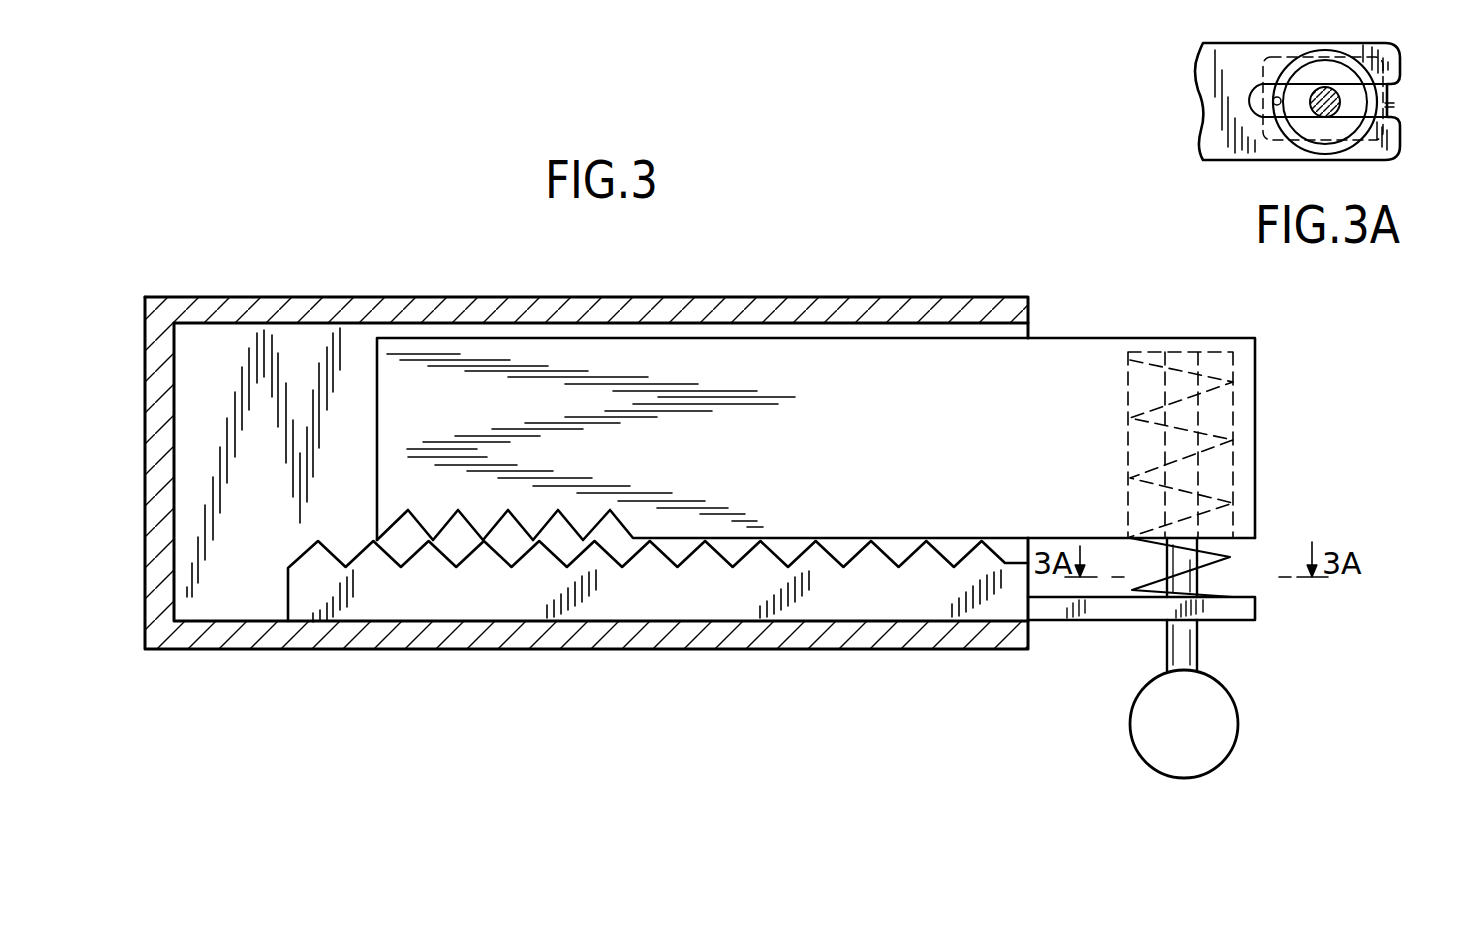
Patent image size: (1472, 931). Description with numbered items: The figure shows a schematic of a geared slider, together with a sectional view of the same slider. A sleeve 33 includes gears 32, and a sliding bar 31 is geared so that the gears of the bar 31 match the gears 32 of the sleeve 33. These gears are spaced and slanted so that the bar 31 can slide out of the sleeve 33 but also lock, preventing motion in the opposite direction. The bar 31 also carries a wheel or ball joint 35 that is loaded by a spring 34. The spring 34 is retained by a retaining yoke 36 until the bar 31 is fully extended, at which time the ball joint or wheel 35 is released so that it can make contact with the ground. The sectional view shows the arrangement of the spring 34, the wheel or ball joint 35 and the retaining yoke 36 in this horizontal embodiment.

In FIG. 3, the sliding bar 31 is at (1198, 337).
In FIG. 3, the gears 32 is at (556, 676).
In FIG. 3, the sleeve 33 is at (632, 297).
In FIG. 3, the spring 34 is at (1230, 557).
In FIG. 3A, the spring 34 is at (1377, 98).
In FIG. 3, the wheel or ball joint 35 is at (1243, 703).
In FIG. 3A, the wheel or ball joint 35 is at (1395, 105).
In FIG. 3, the retaining yoke 36 is at (1257, 608).
In FIG. 3A, the retaining yoke 36 is at (1388, 145).